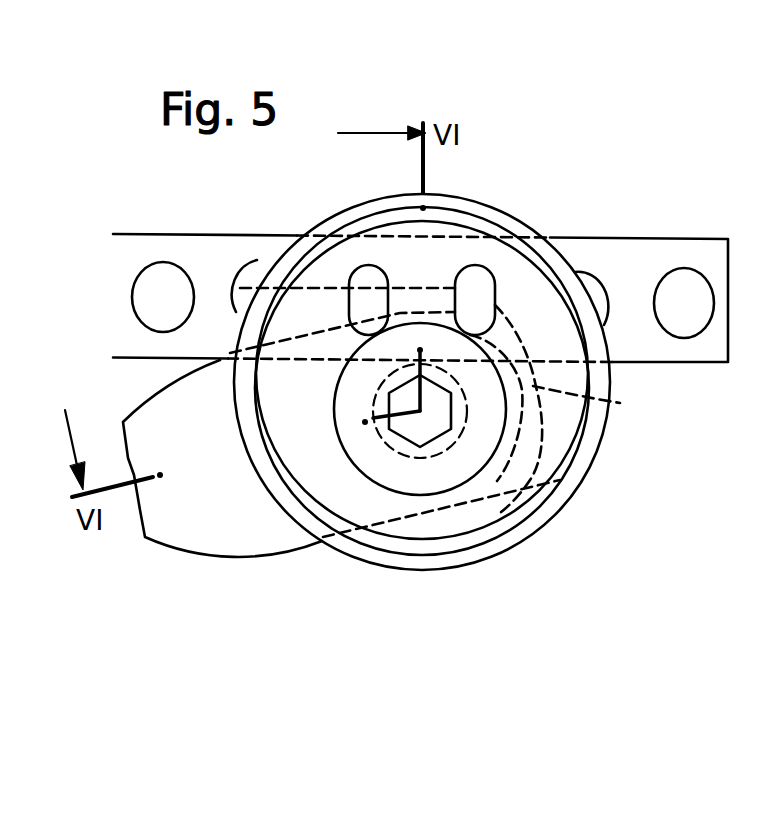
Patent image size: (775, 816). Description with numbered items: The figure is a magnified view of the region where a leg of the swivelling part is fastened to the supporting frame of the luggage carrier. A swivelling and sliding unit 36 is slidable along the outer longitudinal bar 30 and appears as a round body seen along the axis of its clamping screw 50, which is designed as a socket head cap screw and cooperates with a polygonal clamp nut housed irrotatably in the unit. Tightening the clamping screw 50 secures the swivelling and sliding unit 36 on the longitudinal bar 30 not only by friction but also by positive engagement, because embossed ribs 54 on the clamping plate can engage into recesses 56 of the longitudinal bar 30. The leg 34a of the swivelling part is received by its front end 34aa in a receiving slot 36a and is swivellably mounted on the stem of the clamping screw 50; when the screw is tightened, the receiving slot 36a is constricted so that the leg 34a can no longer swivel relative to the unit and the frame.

The longitudinal bar 30 is at (612, 260).
The recesses 56 is at (176, 283).
The swivelling and sliding unit 36 is at (494, 245).
The receiving slot 36a is at (608, 402).
The ribs 54 is at (460, 276).
The leg 34a is at (233, 523).
The front end 34aa is at (565, 498).
The clamping screw 50 is at (482, 447).